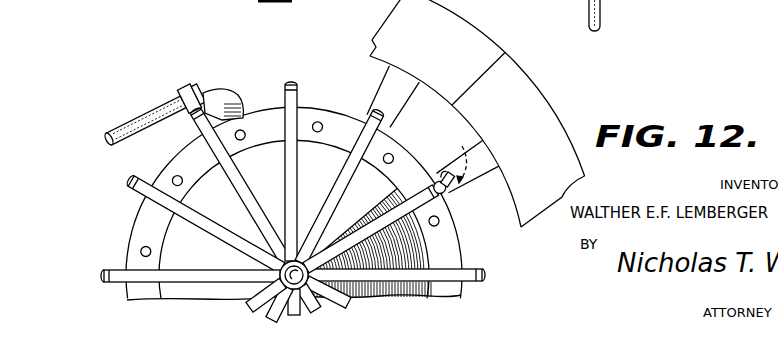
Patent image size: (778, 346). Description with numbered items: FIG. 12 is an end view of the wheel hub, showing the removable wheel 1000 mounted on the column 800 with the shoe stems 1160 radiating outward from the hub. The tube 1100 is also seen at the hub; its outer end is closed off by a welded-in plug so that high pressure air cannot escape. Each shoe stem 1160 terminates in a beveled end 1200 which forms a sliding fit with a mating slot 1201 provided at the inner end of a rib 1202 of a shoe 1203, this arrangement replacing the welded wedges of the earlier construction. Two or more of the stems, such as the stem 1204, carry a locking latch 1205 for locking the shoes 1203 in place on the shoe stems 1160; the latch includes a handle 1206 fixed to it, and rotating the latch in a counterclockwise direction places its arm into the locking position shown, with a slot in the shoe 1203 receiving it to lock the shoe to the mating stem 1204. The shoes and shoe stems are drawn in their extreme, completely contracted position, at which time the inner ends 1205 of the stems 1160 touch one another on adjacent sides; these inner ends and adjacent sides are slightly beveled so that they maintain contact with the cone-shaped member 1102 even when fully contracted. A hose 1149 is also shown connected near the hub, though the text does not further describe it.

The column 800 is at (333, 0).
The wheel 1000 is at (645, 21).
The tube 1100 is at (257, 300).
The cone-shaped member 1102 is at (260, 152).
The hose 1149 is at (142, 116).
The shoe stems 1160 is at (346, 184).
The beveled ends 1200 is at (291, 83).
The mating slots 1201 is at (378, 115).
The ribs 1202 is at (400, 88).
The shoes 1203 is at (450, 23).
The stem 1204 is at (391, 213).
The locking latches 1205 is at (462, 147).
The handle 1206 is at (466, 197).